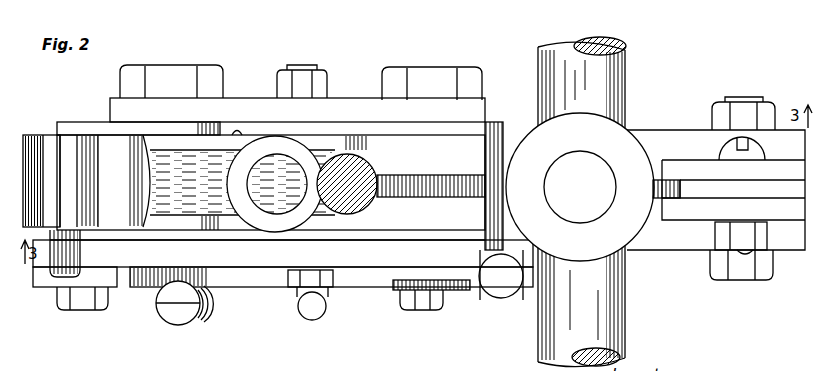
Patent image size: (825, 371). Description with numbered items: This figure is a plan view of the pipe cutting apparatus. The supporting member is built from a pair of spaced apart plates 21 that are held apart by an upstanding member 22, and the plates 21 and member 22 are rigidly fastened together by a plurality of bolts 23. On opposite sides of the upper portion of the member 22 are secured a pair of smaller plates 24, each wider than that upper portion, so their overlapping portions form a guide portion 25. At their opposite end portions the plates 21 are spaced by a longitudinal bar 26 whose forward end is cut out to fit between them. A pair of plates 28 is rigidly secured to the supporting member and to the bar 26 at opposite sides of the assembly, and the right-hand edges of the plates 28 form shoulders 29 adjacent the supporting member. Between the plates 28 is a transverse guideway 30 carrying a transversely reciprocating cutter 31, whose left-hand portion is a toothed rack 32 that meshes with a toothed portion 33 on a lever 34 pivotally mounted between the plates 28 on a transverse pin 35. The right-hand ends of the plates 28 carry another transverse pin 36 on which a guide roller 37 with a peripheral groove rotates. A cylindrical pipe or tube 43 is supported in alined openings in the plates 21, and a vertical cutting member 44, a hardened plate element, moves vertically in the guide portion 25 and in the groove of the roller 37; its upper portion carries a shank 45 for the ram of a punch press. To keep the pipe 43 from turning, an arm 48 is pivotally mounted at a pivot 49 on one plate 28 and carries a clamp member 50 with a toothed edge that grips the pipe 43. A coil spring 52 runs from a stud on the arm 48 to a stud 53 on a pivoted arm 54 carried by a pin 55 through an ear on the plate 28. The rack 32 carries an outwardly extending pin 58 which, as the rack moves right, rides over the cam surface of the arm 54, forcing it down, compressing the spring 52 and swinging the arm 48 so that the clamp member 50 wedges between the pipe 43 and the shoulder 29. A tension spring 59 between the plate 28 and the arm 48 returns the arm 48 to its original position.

The plates 21 is at (678, 135).
The upstanding member 22 is at (783, 194).
The bolts 23 is at (742, 278).
The smaller plates 24 is at (692, 170).
The guide portion 25 is at (668, 178).
The longitudinal bar 26 is at (333, 140).
The plates 28 is at (355, 103).
The shoulders 29 is at (478, 270).
The transverse guideway 30 is at (240, 124).
The transversely reciprocating cutter 31 is at (34, 130).
The toothed rack 32 is at (41, 142).
The toothed portion 33 is at (97, 140).
The lever 34 is at (306, 207).
The transverse pin 35 is at (168, 72).
The transverse pin 36 is at (437, 75).
The guide roller 37 is at (492, 135).
The cylindrical pipe or tube 43 is at (560, 55).
The vertical cutting member 44 is at (667, 228).
The shank 45 is at (588, 122).
The arm 48 is at (378, 284).
The pivot 49 is at (415, 310).
The clamp member 50 is at (522, 266).
The coil spring 52 is at (210, 310).
The stud 53 is at (168, 313).
The pivoted arm 54 is at (128, 286).
The pin 55 is at (83, 305).
The pin 58 is at (58, 276).
The tension spring 59 is at (312, 318).